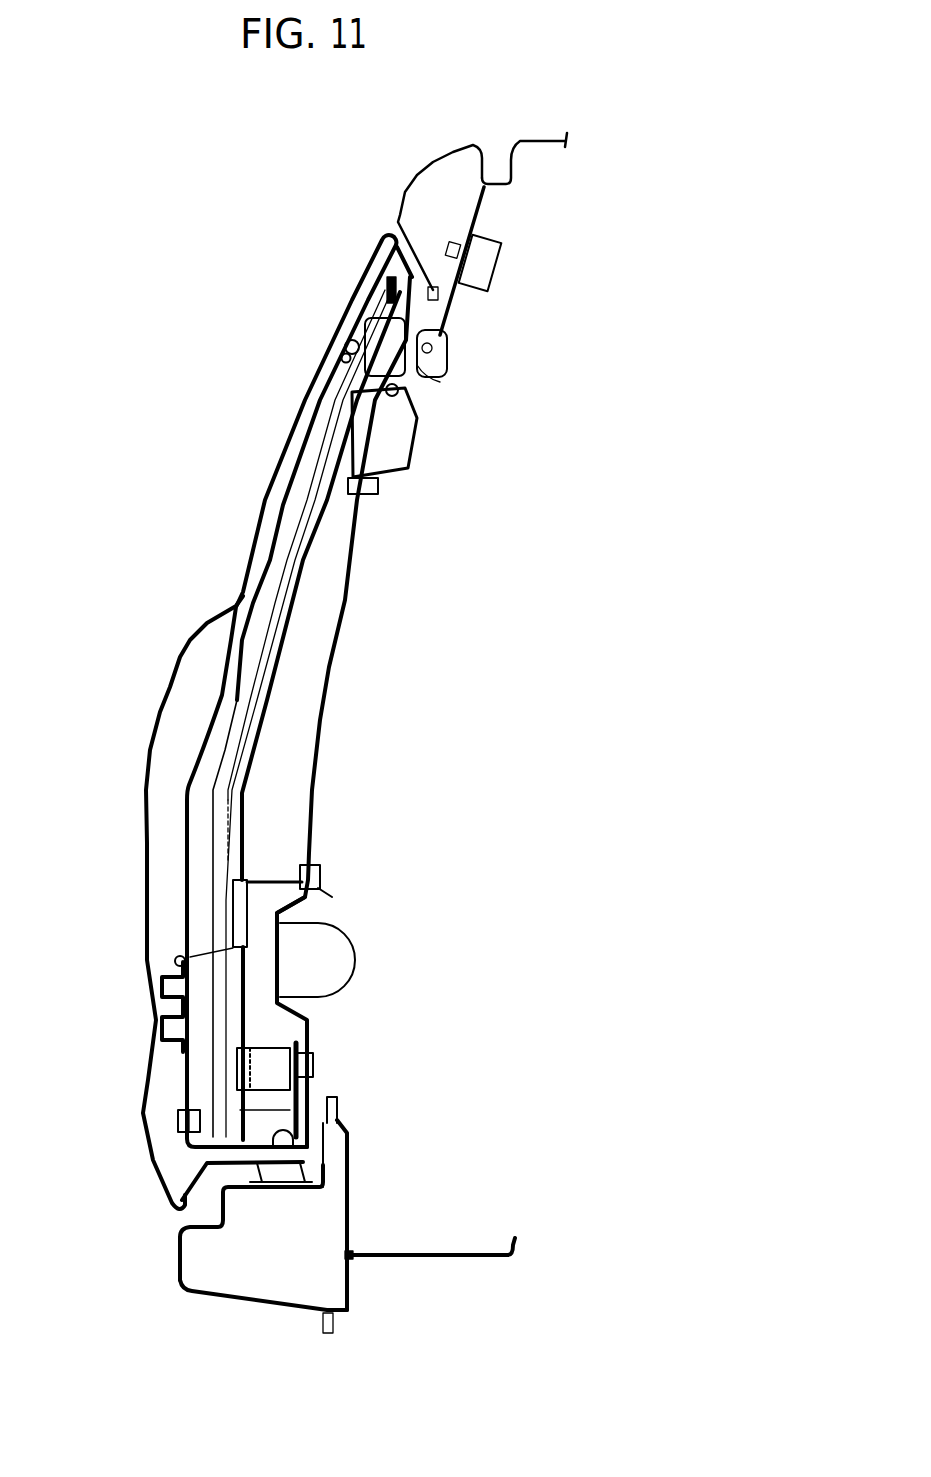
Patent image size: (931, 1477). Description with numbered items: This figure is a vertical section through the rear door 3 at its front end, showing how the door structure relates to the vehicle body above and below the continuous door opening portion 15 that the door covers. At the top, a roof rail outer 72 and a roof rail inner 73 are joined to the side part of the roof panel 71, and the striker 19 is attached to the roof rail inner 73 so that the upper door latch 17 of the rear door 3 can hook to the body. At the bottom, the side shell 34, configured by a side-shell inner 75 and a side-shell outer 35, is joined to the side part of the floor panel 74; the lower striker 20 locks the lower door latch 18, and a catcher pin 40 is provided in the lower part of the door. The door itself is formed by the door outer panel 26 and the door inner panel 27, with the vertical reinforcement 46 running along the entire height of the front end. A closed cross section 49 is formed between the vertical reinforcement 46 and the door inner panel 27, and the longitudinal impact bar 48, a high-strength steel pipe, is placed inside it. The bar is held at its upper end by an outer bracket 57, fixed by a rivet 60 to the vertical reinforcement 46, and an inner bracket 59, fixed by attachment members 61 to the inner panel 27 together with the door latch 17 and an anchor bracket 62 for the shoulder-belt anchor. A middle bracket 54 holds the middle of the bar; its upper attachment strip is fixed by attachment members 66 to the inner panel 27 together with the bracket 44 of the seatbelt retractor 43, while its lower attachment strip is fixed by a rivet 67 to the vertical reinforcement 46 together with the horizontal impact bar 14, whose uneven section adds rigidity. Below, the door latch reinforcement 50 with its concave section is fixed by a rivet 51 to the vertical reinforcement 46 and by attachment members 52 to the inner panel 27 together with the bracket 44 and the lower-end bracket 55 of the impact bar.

The rear door 3 is at (249, 722).
The horizontal impact bar 14 is at (160, 988).
The door opening portion 15 is at (433, 316).
The door latch 17 is at (420, 375).
The door latch 18 is at (260, 1135).
The striker 19 is at (450, 322).
The striker 20 is at (303, 1162).
The door outer panel 26 is at (162, 707).
The door inner panel 27 is at (330, 727).
The side shell 34 is at (168, 1260).
The side-shell outer 35 is at (244, 1305).
The catcher pin 40 is at (337, 1102).
The seatbelt retractor 43 is at (353, 955).
The bracket 44 is at (307, 917).
The vertical reinforcement 46 is at (240, 637).
The longitudinal impact bar 48 is at (280, 657).
The closed cross section 49 is at (278, 785).
The door latch reinforcement 50 is at (240, 1078).
The rivet 51 is at (180, 1118).
The attachment members 52 is at (312, 1052).
The middle bracket 54 is at (233, 902).
The lower-end bracket 55 is at (243, 1068).
The outer bracket 57 is at (341, 357).
The inner bracket 59 is at (372, 420).
The rivet 60 is at (350, 343).
The attachment members 61 is at (402, 394).
The anchor bracket 62 is at (407, 463).
The attachment members 66 is at (320, 873).
The rivet 67 is at (176, 960).
The roof panel 71 is at (532, 142).
The roof rail outer 72 is at (421, 167).
The roof rail inner 73 is at (486, 215).
The floor panel 74 is at (478, 1253).
The side-shell inner 75 is at (352, 1212).